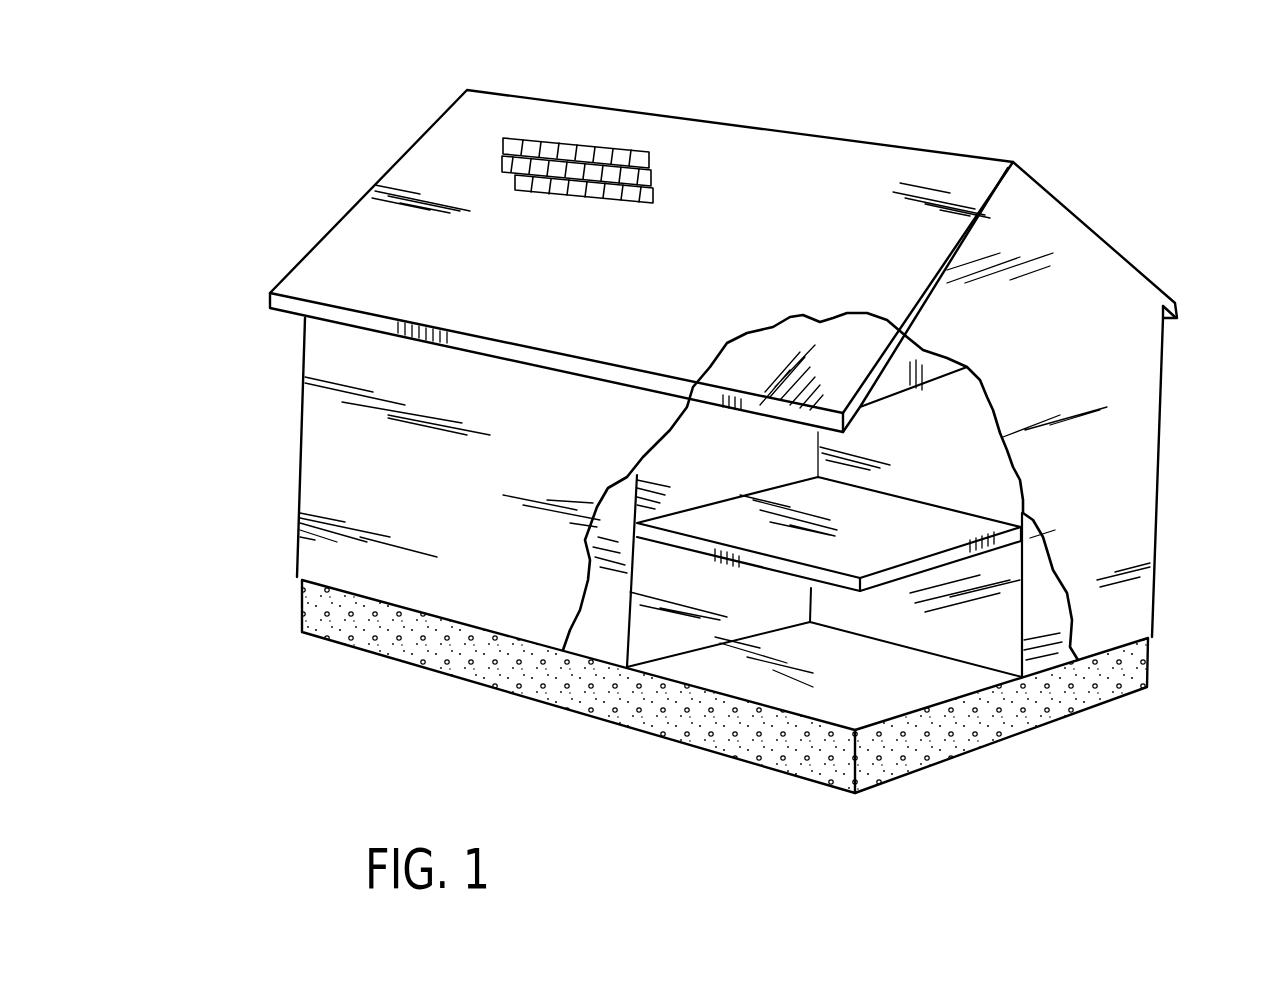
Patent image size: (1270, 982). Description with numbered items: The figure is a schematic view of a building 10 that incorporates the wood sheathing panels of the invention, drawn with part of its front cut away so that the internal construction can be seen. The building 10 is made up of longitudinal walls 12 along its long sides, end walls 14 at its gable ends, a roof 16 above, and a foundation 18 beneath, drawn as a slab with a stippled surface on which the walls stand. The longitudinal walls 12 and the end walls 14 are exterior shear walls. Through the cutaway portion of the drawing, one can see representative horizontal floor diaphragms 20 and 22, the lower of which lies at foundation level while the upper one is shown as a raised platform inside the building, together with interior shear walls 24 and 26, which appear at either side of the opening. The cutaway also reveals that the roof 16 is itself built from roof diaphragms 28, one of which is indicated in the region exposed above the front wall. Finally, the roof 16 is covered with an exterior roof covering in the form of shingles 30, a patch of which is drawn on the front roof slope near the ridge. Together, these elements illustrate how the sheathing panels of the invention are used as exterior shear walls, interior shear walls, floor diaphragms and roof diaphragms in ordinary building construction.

The building 10 is at (398, 122).
The longitudinal walls 12 is at (410, 585).
The end walls 14 is at (1108, 462).
The roof 16 is at (683, 108).
The foundation 18 is at (299, 603).
The horizontal floor diaphragm 20 is at (787, 697).
The horizontal floor diaphragm 22 is at (897, 535).
The interior shear wall 24 is at (652, 640).
The interior shear wall 26 is at (990, 645).
The roof diaphragms 28 is at (835, 347).
The shingles 30 is at (553, 137).